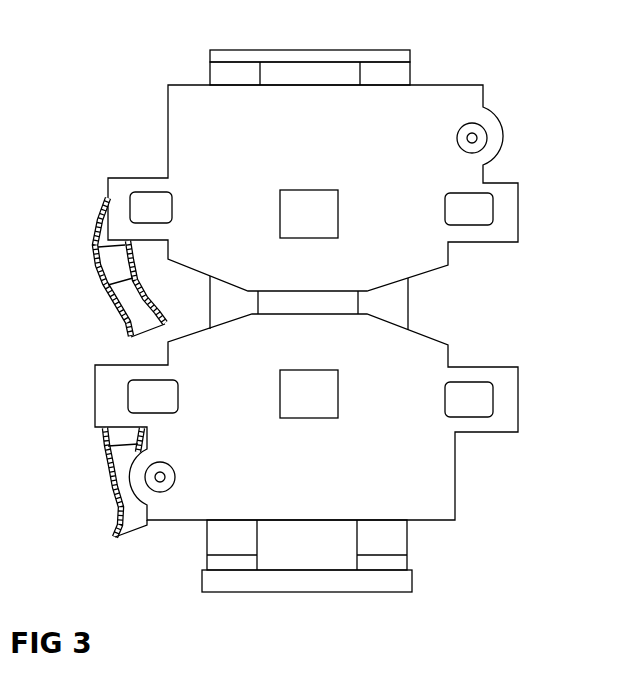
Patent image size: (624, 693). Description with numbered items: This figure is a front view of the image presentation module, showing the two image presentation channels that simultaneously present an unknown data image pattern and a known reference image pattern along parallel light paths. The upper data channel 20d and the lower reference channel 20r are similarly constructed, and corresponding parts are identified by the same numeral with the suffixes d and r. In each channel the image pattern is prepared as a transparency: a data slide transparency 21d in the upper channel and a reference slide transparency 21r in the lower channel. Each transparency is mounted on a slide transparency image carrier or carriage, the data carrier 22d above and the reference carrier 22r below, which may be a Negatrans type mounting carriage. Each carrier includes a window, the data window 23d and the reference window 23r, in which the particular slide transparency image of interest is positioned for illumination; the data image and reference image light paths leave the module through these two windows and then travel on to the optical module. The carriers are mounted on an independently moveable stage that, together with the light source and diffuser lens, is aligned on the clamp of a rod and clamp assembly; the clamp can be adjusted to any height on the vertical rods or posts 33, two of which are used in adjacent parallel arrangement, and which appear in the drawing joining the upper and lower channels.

The data channel 20d is at (320, 128).
The reference channel 20r is at (330, 350).
The data slide transparency 21d is at (98, 259).
The reference slide transparency 21r is at (135, 486).
The data slide transparency image carrier 22d is at (478, 102).
The reference slide transparency image carrier 22r is at (455, 474).
The data window 23d is at (330, 188).
The reference window 23r is at (328, 420).
The vertical rods or posts 33 is at (210, 85).